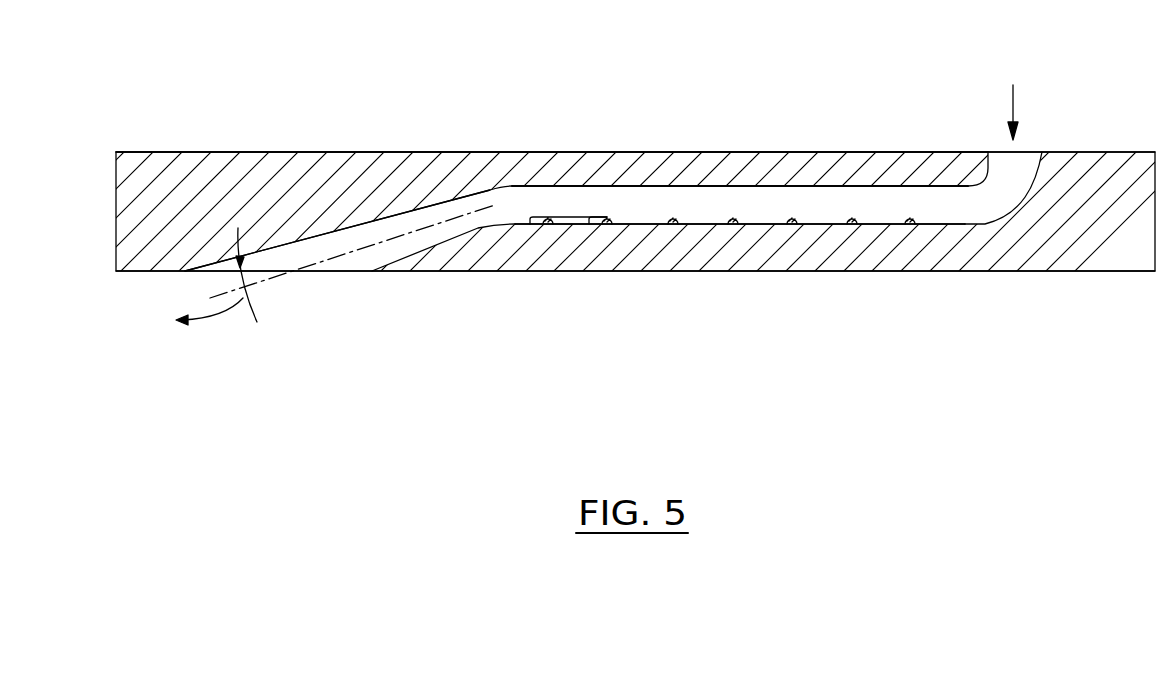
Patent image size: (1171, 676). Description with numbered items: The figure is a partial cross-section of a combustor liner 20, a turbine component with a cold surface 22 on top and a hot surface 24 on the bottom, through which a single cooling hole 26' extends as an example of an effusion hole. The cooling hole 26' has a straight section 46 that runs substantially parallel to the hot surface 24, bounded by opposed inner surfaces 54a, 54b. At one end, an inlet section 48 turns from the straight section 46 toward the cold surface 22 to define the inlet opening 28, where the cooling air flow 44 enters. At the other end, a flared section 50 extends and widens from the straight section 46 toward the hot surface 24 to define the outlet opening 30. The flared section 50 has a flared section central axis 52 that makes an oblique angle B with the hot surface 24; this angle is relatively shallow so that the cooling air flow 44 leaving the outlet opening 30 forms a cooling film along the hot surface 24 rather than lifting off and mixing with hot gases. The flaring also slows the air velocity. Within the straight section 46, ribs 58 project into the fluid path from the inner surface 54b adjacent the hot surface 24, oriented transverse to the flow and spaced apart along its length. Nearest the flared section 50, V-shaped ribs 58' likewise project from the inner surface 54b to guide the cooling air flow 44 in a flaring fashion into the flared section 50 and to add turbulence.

The combustor liner 20 is at (982, 257).
The cold surface 22 is at (570, 152).
The hot surface 24 is at (540, 273).
The cooling hole 26' is at (740, 146).
The inlet opening 28 is at (1015, 152).
The outlet opening 30 is at (372, 273).
The cooling air flow 44 is at (208, 316).
The straight section 46 is at (703, 192).
The inlet section 48 is at (990, 176).
The flared section 50 is at (380, 218).
The flared section central axis 52 is at (220, 294).
The inner surface 54a is at (788, 192).
The inner surface 54b is at (755, 226).
The ribs 58 is at (789, 288).
The V-shaped ribs 58' is at (580, 288).
The oblique angle B is at (254, 275).